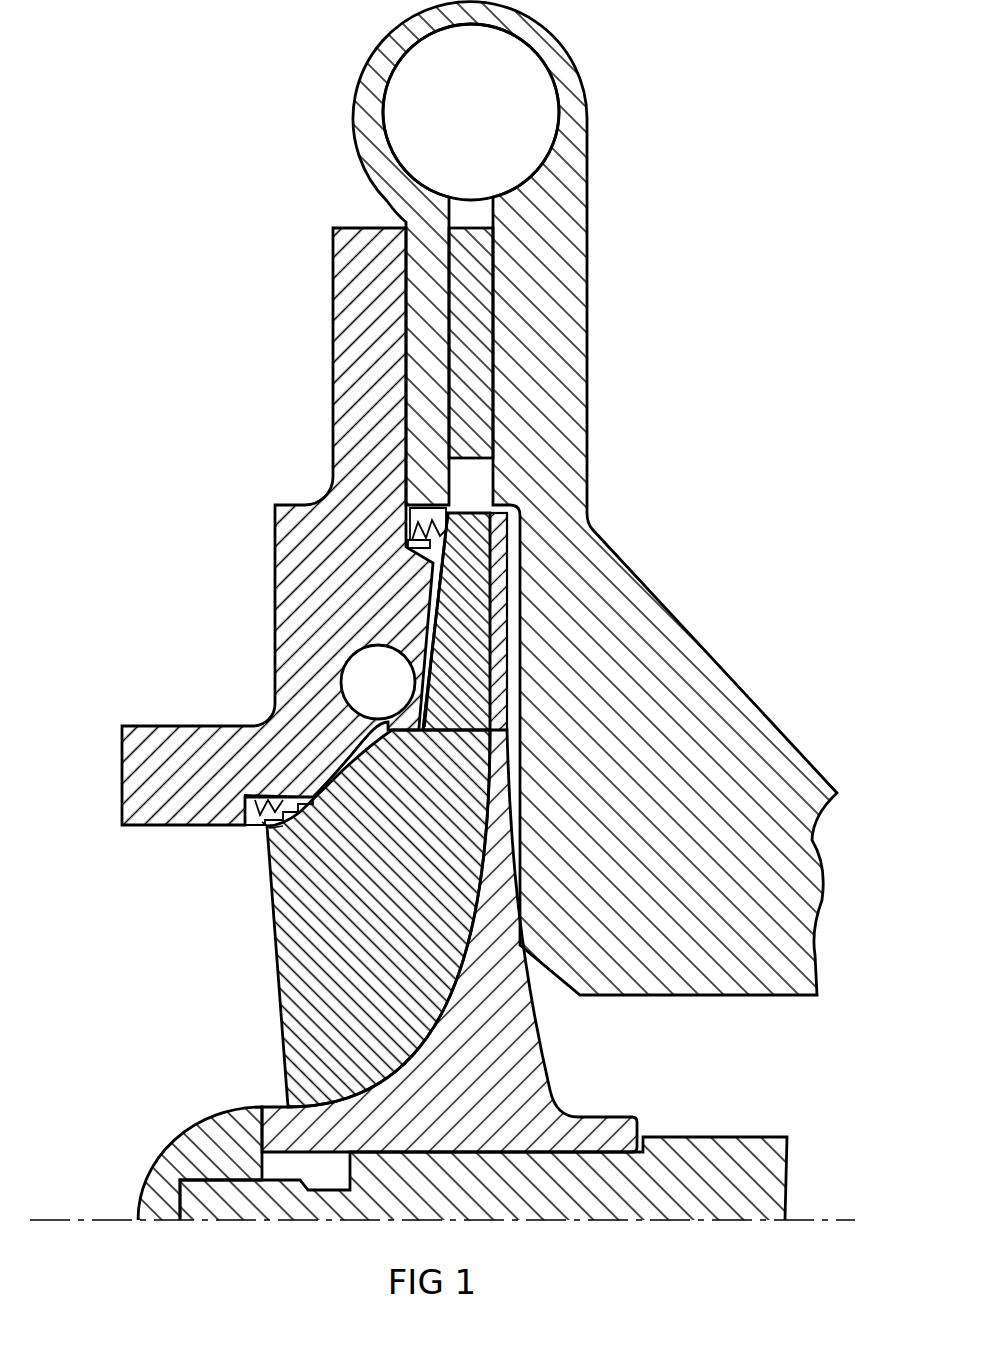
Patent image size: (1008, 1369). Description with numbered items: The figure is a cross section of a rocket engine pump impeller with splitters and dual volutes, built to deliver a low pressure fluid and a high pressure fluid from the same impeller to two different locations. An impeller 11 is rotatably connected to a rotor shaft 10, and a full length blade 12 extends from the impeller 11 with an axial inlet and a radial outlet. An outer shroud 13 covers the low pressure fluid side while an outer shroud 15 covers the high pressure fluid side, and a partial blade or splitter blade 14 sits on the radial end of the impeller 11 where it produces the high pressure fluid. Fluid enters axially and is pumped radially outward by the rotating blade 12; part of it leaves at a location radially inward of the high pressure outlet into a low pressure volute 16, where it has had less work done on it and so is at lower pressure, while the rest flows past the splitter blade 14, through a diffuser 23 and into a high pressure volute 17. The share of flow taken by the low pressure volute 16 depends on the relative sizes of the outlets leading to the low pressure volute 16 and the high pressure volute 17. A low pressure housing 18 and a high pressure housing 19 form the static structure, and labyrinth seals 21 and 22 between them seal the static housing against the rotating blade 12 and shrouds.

The rotor shaft 10 is at (738, 1173).
The impeller 11 is at (493, 1040).
The full length blade 12 is at (347, 923).
The outer shroud 13 is at (270, 832).
The partial blade or splitter blade 14 is at (468, 580).
The outer shroud 15 is at (452, 618).
The low pressure volute 16 is at (380, 682).
The high pressure volute 17 is at (498, 90).
The low pressure housing 18 is at (328, 563).
The high pressure housing 19 is at (552, 398).
The labyrinth seal 21 is at (262, 808).
The labyrinth seal 22 is at (415, 518).
The diffuser 23 is at (477, 308).